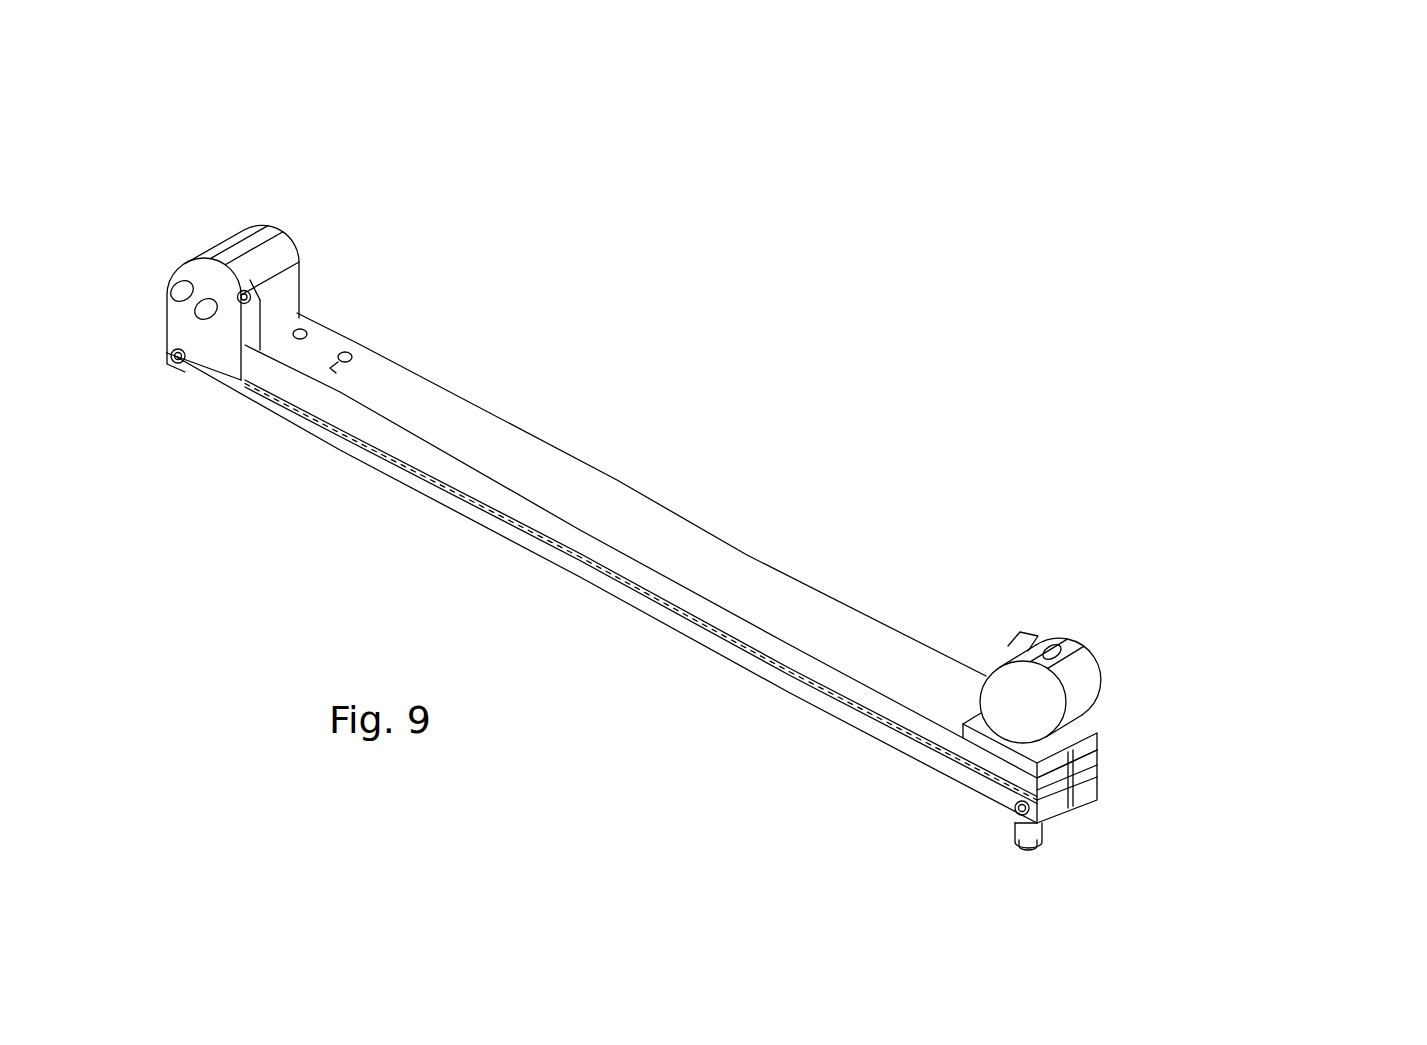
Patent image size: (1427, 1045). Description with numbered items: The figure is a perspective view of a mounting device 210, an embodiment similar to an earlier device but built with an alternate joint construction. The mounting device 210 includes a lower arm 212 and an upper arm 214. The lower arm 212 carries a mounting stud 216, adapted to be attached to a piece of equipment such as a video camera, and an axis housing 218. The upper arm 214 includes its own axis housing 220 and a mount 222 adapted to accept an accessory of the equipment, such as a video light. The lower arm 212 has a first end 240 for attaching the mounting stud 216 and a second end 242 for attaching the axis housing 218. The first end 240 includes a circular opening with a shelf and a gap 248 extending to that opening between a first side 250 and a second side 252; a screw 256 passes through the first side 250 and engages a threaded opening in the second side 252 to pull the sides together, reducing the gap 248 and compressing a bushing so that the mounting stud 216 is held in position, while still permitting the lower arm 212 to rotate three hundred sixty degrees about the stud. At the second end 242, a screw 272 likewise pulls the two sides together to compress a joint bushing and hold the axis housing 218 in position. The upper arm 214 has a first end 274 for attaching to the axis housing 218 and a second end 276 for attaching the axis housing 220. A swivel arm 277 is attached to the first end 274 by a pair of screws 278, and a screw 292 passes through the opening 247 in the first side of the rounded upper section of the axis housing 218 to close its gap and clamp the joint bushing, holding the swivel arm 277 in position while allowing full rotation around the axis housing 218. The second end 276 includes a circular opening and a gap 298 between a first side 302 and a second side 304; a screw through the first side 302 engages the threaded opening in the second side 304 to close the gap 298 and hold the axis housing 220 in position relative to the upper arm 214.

The mounting device 210 is at (647, 372).
The lower arm 212 is at (675, 630).
The upper arm 214 is at (747, 557).
The mounting stud 216 is at (1045, 836).
The axis housing 218 is at (188, 250).
The axis housing 220 is at (1098, 722).
The mount 222 is at (1093, 680).
The first end 240 is at (1015, 830).
The second end 242 is at (183, 373).
The opening 247 is at (258, 307).
The gap 248 is at (1076, 803).
The first side 250 is at (1031, 848).
The second side 252 is at (1098, 783).
The screw 256 is at (1014, 810).
The screw 272 is at (172, 358).
The first end 274 is at (295, 370).
The second end 276 is at (997, 769).
The swivel arm 277 is at (233, 222).
The screws 278 is at (330, 367).
The screw 292 is at (250, 277).
The gap 298 is at (1098, 772).
The first side 302 is at (1098, 753).
The second side 304 is at (1003, 792).